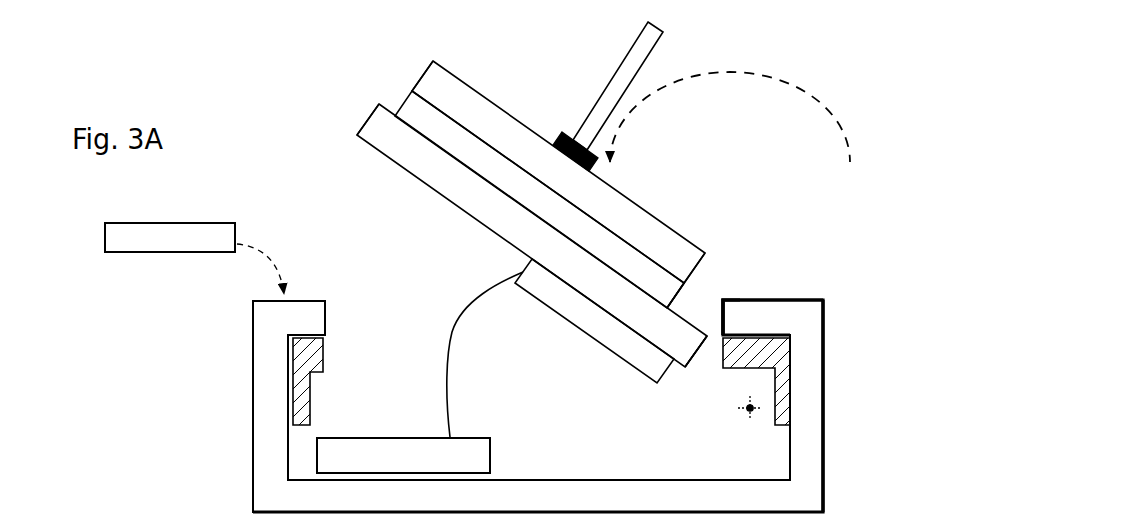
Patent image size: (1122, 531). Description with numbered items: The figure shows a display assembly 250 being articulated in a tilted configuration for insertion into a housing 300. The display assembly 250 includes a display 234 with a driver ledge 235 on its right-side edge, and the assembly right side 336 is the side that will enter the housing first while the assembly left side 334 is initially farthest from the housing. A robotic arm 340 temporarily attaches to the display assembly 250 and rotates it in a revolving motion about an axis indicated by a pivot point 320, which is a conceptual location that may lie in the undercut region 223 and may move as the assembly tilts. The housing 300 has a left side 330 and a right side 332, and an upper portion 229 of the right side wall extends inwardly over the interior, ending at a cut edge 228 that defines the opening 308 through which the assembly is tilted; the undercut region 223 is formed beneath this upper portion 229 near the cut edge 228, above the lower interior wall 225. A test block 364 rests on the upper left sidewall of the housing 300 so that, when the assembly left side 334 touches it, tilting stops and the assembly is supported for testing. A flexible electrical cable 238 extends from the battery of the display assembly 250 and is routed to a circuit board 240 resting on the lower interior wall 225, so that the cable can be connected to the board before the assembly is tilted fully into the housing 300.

The display assembly 250 is at (487, 91).
The robotic arm 340 is at (665, 43).
The assembly left side 334 is at (390, 92).
The assembly right side 336 is at (718, 247).
The cut edge 228 is at (730, 296).
The upper portion of the side wall 229 is at (809, 298).
The driver ledge 235 is at (698, 320).
The display 234 is at (697, 364).
The undercut region 223 is at (539, 384).
The pivot point 320 is at (742, 415).
The right side 332 is at (828, 393).
The left side of the housing 330 is at (249, 397).
The housing 300 is at (249, 447).
The test block 364 is at (101, 235).
The opening 308 is at (386, 304).
The flexible electrical cable 238 is at (456, 344).
The circuit board 240 is at (399, 435).
The lower interior wall 225 is at (551, 477).